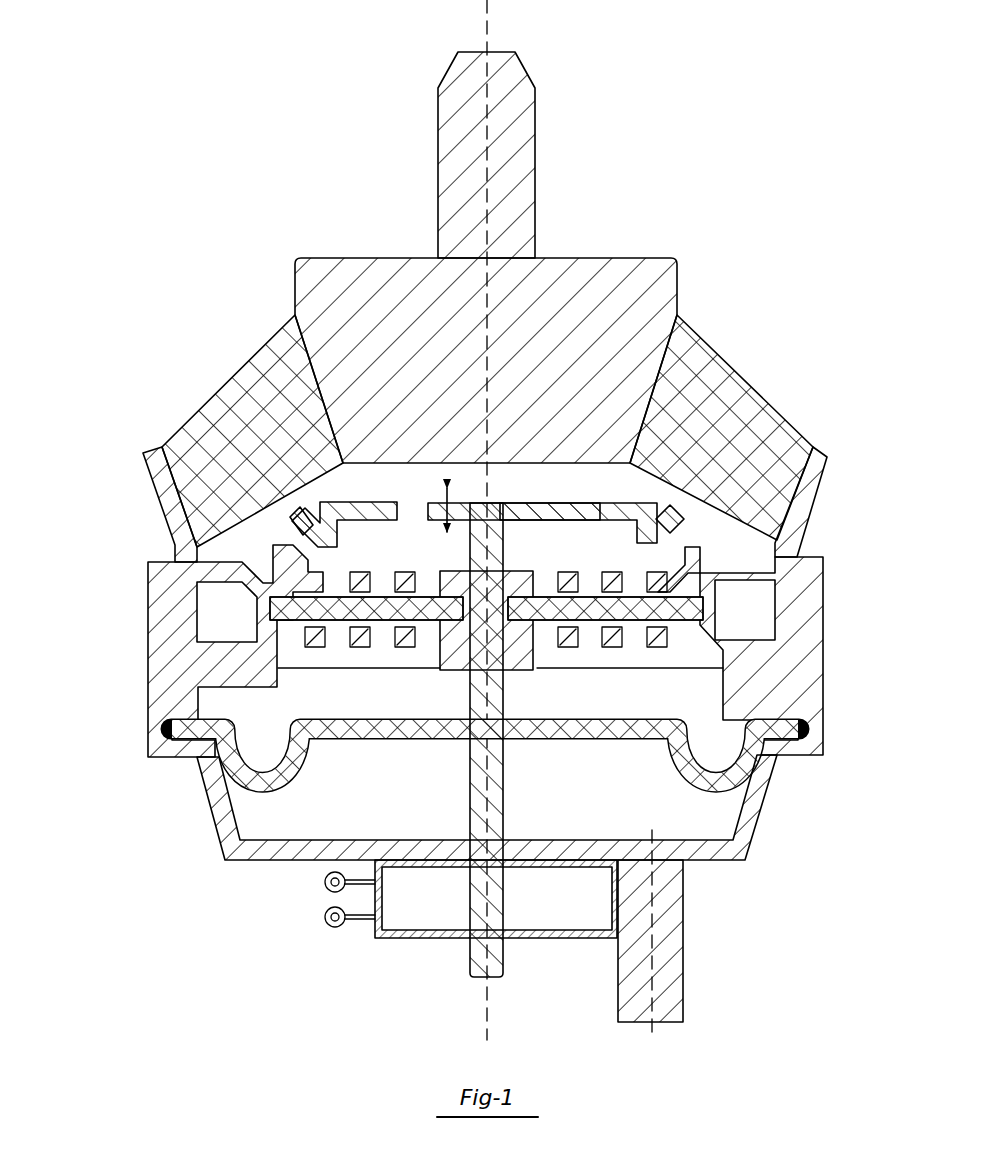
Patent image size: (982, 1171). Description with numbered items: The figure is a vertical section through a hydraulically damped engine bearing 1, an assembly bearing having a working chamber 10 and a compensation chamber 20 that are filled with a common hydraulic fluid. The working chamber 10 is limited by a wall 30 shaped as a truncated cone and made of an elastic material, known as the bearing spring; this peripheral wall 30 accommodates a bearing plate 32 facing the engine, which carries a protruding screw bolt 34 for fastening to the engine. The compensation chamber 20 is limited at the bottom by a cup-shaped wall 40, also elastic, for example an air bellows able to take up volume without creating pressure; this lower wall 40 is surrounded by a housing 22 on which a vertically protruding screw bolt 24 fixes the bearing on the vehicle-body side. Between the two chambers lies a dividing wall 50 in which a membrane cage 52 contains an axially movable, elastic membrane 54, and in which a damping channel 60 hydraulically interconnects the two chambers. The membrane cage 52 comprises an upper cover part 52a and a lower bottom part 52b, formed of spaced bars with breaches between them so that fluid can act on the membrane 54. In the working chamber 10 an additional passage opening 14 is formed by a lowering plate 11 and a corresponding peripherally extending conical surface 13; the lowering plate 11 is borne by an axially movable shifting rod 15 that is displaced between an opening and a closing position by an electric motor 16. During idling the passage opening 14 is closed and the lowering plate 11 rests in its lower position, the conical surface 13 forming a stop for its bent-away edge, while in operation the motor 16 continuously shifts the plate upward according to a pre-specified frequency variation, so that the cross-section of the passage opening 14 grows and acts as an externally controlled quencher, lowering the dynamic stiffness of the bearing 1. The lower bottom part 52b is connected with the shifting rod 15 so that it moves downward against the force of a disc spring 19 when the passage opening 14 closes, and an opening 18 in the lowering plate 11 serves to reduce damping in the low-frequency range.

The hydraulically damped engine bearing 1 is at (618, 186).
The working chamber 10 is at (487, 474).
The lowering plate 11 is at (548, 510).
The conical surface 13 is at (243, 572).
The passage opening 14 is at (201, 641).
The shifting rod 15 is at (482, 953).
The motor 16 is at (558, 897).
The opening 18 is at (410, 512).
The disc spring 19 is at (605, 672).
The compensation chamber 20 is at (511, 775).
The housing 22 is at (753, 803).
The screw bolt 24 is at (663, 972).
The wall 30 is at (792, 432).
The bearing plate 32 is at (652, 272).
The screw bolt 34 is at (513, 97).
The cup-shaped wall 40 is at (263, 785).
The dividing wall 50 is at (455, 675).
The membrane cage 52 is at (486, 666).
The upper cover part 52a is at (568, 578).
The lower bottom part 52b is at (567, 652).
The membrane 54 is at (290, 620).
The damping channel 60 is at (765, 622).